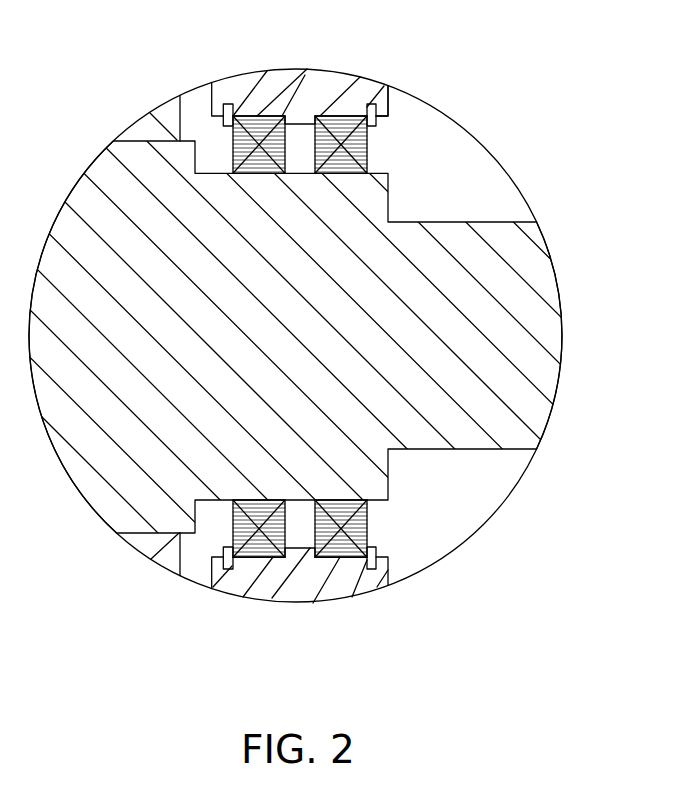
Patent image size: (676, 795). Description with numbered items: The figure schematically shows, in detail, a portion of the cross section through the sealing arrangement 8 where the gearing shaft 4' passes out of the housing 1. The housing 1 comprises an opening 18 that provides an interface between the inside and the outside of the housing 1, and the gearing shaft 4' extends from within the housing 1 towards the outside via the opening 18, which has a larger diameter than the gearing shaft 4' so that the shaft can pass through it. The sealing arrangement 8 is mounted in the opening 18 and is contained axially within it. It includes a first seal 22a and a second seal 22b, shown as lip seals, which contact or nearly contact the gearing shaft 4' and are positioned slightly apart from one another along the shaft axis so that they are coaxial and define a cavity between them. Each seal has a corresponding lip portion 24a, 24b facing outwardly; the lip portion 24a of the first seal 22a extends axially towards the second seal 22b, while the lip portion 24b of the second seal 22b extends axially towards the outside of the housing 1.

The housing 1 is at (328, 82).
The gearing shaft 4' is at (338, 397).
The sealing arrangement 8 is at (302, 573).
The opening 18 is at (385, 137).
The first seal 22a is at (258, 114).
The second seal 22b is at (352, 115).
The lip portion of the first seal 24a is at (288, 125).
The lip portion of the second seal 24b is at (368, 155).